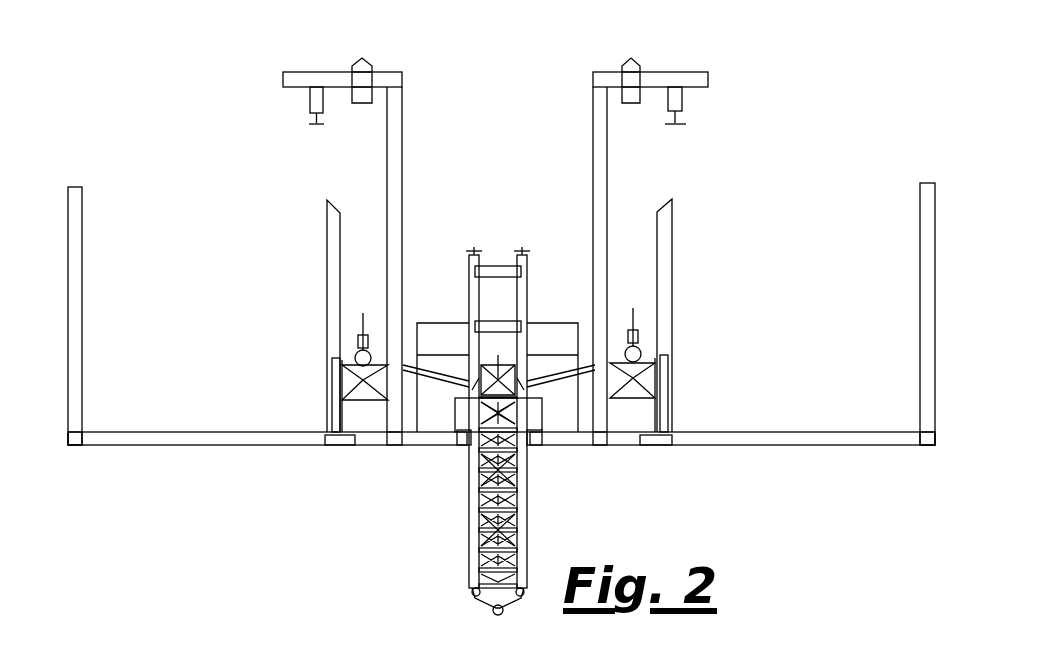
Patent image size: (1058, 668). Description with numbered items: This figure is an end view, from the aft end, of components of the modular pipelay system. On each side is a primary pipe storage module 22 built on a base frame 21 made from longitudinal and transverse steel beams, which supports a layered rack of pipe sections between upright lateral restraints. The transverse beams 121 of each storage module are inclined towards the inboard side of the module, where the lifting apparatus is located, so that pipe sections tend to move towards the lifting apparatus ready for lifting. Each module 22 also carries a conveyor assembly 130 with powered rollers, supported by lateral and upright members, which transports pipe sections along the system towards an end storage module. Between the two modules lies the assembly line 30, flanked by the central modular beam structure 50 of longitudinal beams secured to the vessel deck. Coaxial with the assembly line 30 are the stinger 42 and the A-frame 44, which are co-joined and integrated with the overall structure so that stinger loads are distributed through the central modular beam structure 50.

The primary pipe storage module 22 is at (154, 152).
The base frame 21 is at (172, 440).
The transverse beams 121 is at (112, 440).
The conveyor assembly 130 is at (355, 420).
The A-frame 44 is at (466, 283).
The assembly line 30 is at (499, 378).
The central modular beam structure 50 is at (462, 440).
The stinger 42 is at (468, 530).